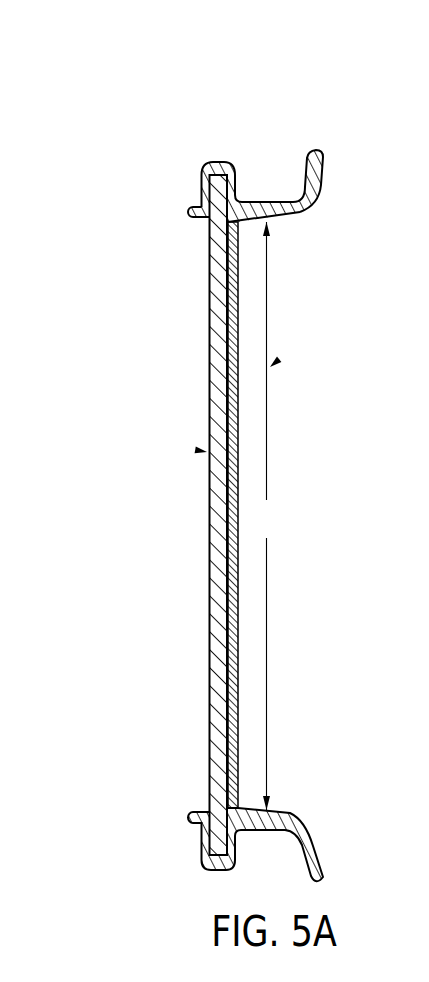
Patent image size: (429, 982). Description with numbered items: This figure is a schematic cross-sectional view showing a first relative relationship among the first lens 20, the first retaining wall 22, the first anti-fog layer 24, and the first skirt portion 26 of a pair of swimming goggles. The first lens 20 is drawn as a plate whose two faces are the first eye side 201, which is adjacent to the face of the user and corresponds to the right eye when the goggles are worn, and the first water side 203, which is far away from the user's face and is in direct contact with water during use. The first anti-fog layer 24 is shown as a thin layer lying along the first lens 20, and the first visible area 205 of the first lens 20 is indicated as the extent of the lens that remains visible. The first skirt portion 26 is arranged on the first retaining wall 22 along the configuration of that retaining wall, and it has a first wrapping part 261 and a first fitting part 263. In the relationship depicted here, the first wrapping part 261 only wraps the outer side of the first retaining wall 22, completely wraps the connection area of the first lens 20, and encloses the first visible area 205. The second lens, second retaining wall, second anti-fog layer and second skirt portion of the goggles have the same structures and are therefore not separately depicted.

The first lens 20 is at (217, 663).
The first retaining wall 22 is at (237, 810).
The first anti-fog layer 24 is at (238, 430).
The first skirt portion 26 is at (255, 126).
The first wrapping part 261 is at (219, 160).
The first fitting part 263 is at (303, 153).
The first eye side 201 is at (282, 357).
The first water side 203 is at (196, 450).
The first visible area 205 is at (265, 516).